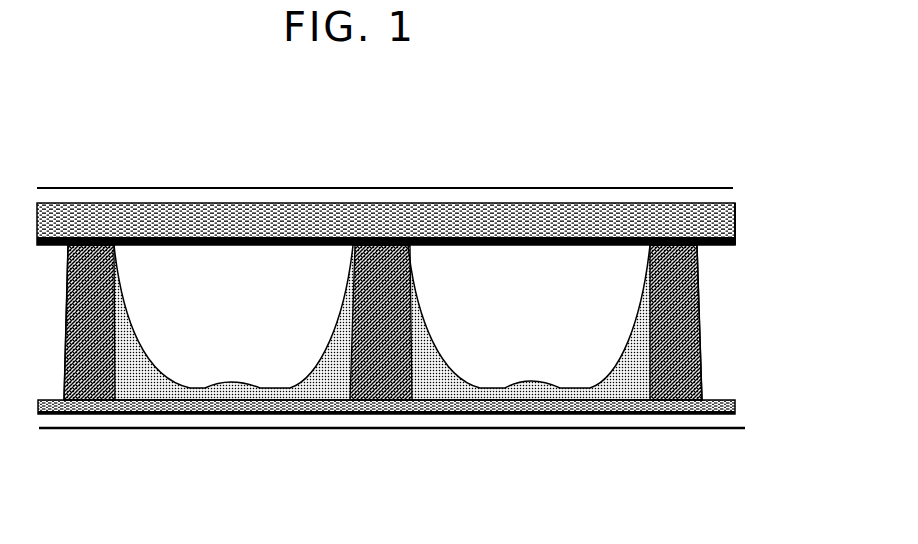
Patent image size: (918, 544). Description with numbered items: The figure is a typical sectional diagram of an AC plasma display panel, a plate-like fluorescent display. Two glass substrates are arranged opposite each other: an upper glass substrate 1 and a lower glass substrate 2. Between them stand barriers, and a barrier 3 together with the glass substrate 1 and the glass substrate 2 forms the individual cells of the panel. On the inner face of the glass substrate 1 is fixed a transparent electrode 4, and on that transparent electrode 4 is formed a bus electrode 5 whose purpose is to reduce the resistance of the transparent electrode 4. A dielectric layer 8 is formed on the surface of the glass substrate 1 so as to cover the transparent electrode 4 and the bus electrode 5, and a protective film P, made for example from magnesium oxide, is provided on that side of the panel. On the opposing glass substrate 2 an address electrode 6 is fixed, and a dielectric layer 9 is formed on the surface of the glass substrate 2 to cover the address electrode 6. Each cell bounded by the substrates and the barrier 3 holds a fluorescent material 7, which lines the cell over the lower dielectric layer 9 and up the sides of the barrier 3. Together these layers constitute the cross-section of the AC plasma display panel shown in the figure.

The glass substrate 1 is at (80, 196).
The glass substrate 2 is at (57, 429).
The barrier 3 is at (108, 405).
The transparent electrode 4 is at (193, 204).
The bus electrode 5 is at (318, 207).
The address electrode 6 is at (238, 415).
The fluorescent material 7 is at (329, 387).
The dielectric layer 8 is at (638, 208).
The dielectric layer 9 is at (614, 415).
The protective film P is at (728, 203).